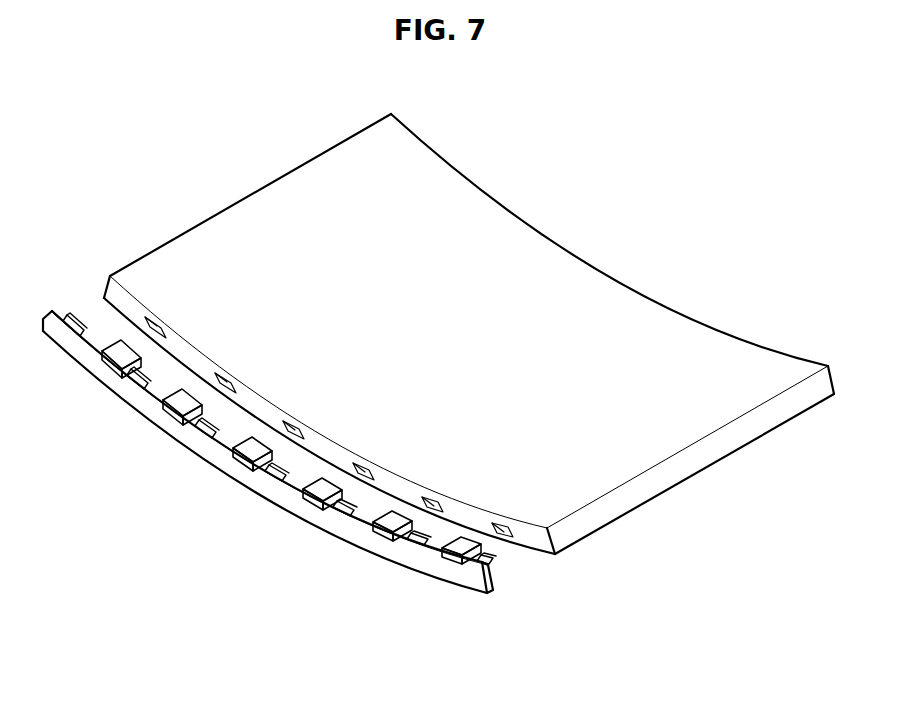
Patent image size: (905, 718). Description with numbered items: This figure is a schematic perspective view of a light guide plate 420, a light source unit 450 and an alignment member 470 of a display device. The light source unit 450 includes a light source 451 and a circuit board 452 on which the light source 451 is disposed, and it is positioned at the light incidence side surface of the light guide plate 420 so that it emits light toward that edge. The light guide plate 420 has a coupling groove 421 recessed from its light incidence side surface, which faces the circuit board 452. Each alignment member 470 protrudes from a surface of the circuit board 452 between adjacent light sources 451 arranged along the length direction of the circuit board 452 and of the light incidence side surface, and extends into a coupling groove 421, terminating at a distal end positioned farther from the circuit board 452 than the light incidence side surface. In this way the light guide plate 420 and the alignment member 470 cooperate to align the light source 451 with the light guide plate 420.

The light guide plate 420 is at (587, 522).
The coupling groove 421 is at (502, 534).
The light source unit 450 is at (269, 490).
The light source 451 is at (406, 544).
The circuit board 452 is at (368, 544).
The alignment member 470 is at (318, 493).